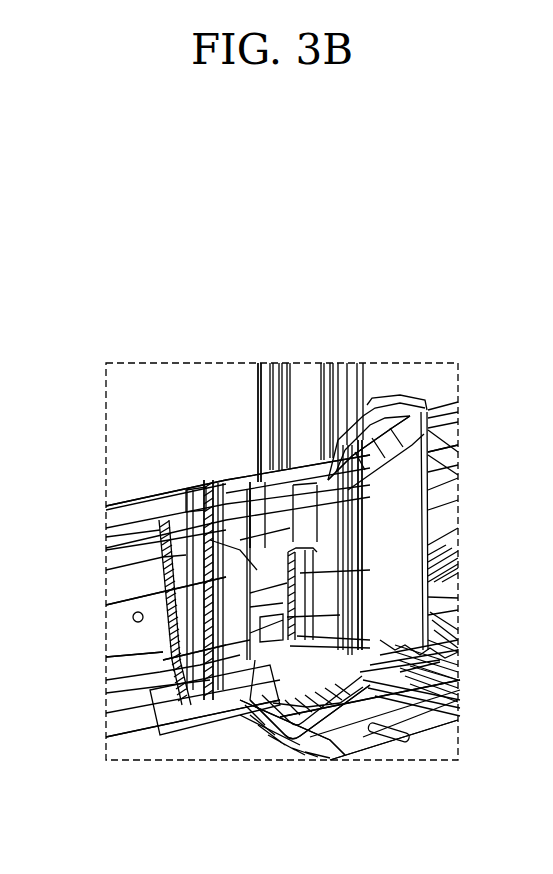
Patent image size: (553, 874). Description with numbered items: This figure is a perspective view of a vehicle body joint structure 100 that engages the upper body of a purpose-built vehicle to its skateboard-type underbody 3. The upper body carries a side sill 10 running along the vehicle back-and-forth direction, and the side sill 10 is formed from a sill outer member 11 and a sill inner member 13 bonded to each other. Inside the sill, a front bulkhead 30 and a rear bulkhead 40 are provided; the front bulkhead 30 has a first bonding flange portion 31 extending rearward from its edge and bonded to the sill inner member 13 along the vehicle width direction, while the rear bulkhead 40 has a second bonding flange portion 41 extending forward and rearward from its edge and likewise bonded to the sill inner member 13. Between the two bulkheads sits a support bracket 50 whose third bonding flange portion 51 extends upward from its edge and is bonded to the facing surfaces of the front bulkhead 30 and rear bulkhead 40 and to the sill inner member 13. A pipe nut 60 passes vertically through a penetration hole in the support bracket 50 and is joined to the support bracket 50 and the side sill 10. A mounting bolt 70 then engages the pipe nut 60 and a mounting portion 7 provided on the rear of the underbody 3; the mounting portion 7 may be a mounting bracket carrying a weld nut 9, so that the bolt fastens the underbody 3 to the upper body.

The vehicle body joint structure 100 is at (258, 212).
The underbody 3 is at (407, 746).
The mounting portion 7 is at (288, 736).
The weld nut 9 is at (250, 700).
The side sill 10 is at (139, 736).
The sill outer member 11 is at (128, 634).
The sill inner member 13 is at (271, 588).
The front bulkhead 30 is at (205, 565).
The first bonding flange portion 31 is at (233, 480).
The rear bulkhead 40 is at (368, 589).
The second bonding flange portion 41 is at (350, 573).
The support bracket 50 is at (150, 550).
The third bonding flange portion 51 is at (106, 605).
The pipe nut 60 is at (150, 680).
The mounting bolt 70 is at (323, 745).